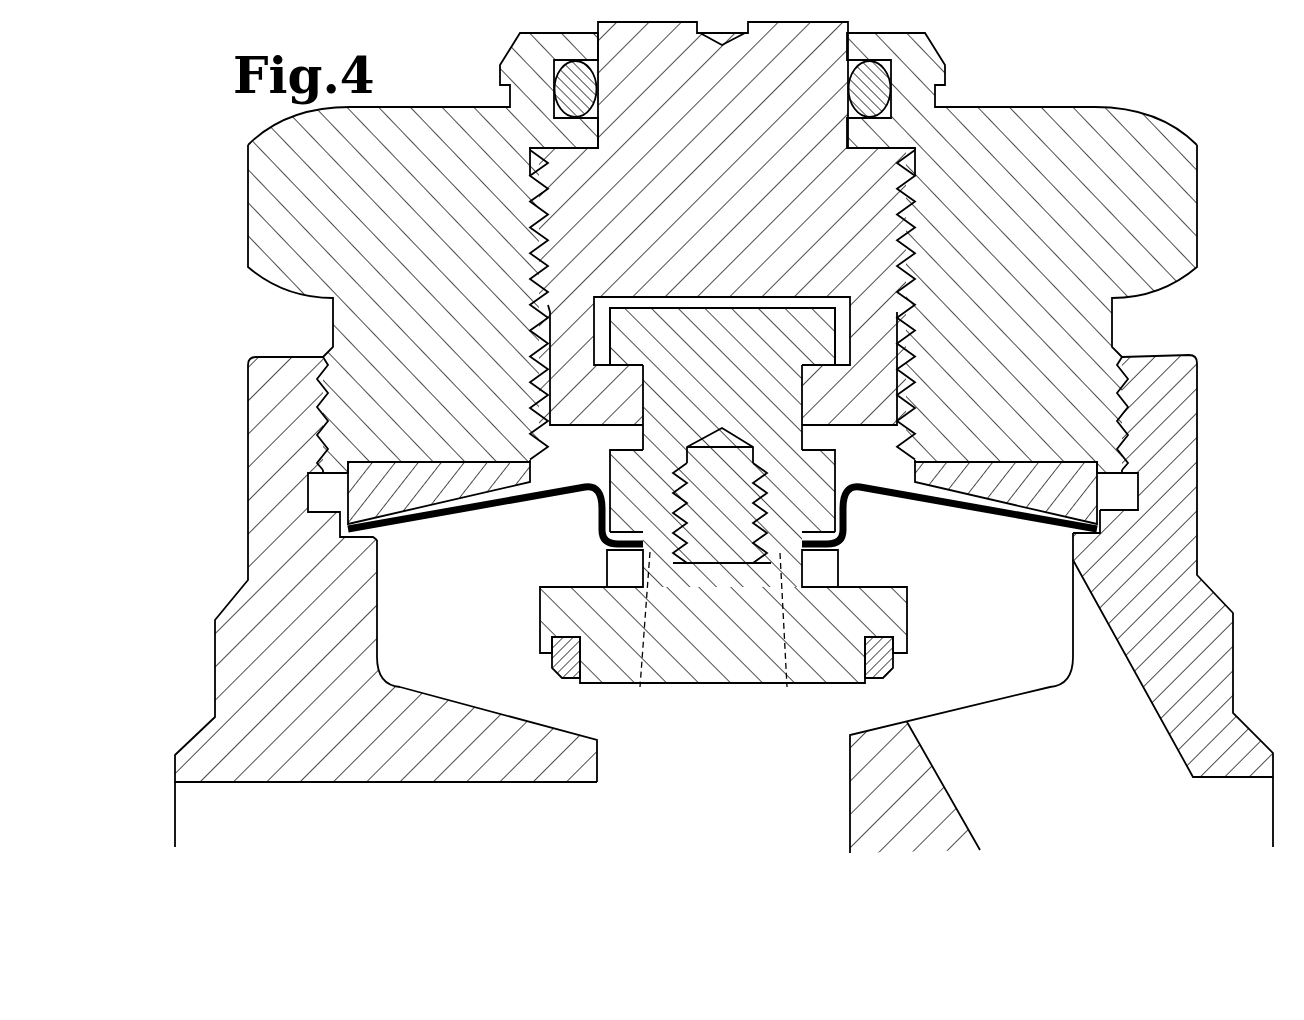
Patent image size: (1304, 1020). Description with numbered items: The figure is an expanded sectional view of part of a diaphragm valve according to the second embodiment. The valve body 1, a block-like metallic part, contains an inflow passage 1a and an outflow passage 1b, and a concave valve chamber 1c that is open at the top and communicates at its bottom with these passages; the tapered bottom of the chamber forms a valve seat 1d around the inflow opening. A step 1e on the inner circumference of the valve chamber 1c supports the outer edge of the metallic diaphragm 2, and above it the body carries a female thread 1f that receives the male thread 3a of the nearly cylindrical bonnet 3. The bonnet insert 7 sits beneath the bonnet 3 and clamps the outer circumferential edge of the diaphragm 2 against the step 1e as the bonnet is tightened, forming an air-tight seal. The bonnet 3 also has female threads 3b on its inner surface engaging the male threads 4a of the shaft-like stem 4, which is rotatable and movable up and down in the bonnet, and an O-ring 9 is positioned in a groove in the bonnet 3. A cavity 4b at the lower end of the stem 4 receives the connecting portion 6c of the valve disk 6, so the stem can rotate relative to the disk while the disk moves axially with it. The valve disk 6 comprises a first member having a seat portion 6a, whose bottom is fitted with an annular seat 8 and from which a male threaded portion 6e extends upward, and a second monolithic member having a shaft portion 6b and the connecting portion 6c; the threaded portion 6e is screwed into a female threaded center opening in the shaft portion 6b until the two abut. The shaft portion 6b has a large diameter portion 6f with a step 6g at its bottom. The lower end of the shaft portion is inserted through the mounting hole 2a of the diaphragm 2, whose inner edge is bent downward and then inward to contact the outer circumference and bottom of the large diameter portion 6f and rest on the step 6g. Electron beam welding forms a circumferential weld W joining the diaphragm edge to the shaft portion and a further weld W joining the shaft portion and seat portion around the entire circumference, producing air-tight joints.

The valve body 1 is at (210, 656).
The inflow passage 1a is at (283, 817).
The outflow passage 1b is at (1113, 733).
The valve chamber 1c is at (420, 608).
The valve seat 1d is at (592, 712).
The step 1e is at (1087, 537).
The female thread 1f is at (1132, 425).
The metallic diaphragm 2 is at (957, 510).
The mounting hole 2a is at (808, 553).
The bonnet 3 is at (242, 201).
The male thread 3a is at (323, 385).
The female threads 3b is at (538, 287).
The stem 4 is at (807, 173).
The male threads 4a is at (903, 237).
The cavity 4b is at (840, 333).
The valve disk 6 is at (741, 687).
The seat portion 6a is at (583, 610).
The shaft portion 6b is at (663, 440).
The connecting portion 6c is at (817, 337).
The male threaded portion 6e is at (683, 540).
The large diameter portion 6f is at (620, 500).
The step 6g is at (637, 545).
The bonnet insert 7 is at (1062, 480).
The annular seat 8 is at (877, 667).
The O-ring 9 is at (573, 83).
The weld W is at (630, 530).